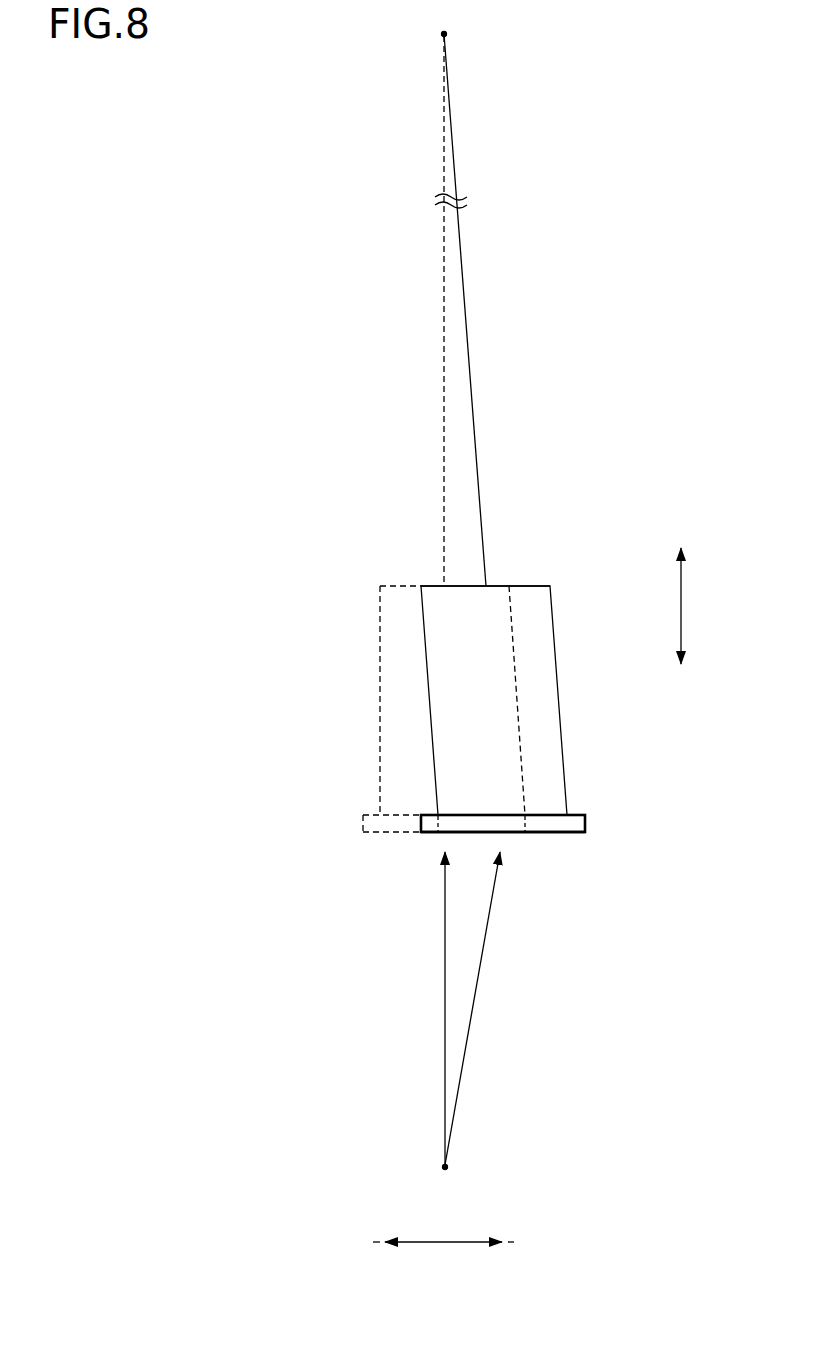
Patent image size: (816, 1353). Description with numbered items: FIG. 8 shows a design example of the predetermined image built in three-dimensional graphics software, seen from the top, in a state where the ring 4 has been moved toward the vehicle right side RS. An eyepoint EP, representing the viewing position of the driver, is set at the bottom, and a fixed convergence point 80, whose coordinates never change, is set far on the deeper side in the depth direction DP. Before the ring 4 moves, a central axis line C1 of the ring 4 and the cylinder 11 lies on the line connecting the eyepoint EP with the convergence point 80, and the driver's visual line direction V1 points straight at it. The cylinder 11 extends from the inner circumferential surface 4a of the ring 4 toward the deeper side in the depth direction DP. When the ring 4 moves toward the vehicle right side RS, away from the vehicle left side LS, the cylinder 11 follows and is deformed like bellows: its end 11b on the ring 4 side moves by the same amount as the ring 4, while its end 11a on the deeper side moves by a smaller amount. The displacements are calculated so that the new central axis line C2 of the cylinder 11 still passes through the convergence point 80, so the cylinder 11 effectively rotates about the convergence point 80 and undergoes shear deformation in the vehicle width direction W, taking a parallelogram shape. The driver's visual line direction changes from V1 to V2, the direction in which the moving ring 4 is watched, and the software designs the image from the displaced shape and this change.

The convergence point 80 is at (447, 35).
The central axis line C1 is at (443, 437).
The central axis line C2 is at (468, 372).
The cylinder 11 is at (559, 713).
The end on the deeper side 11a is at (542, 583).
The end on the ring side 11b is at (544, 814).
The ring 4 is at (529, 850).
The inner circumferential surface 4a is at (565, 818).
The eyepoint EP is at (462, 1170).
The visual line direction V1 is at (442, 989).
The visual line direction V2 is at (478, 990).
The depth direction DP is at (699, 606).
The vehicle width direction W is at (443, 1230).
The vehicle left side LS is at (359, 1244).
The vehicle right side RS is at (527, 1244).